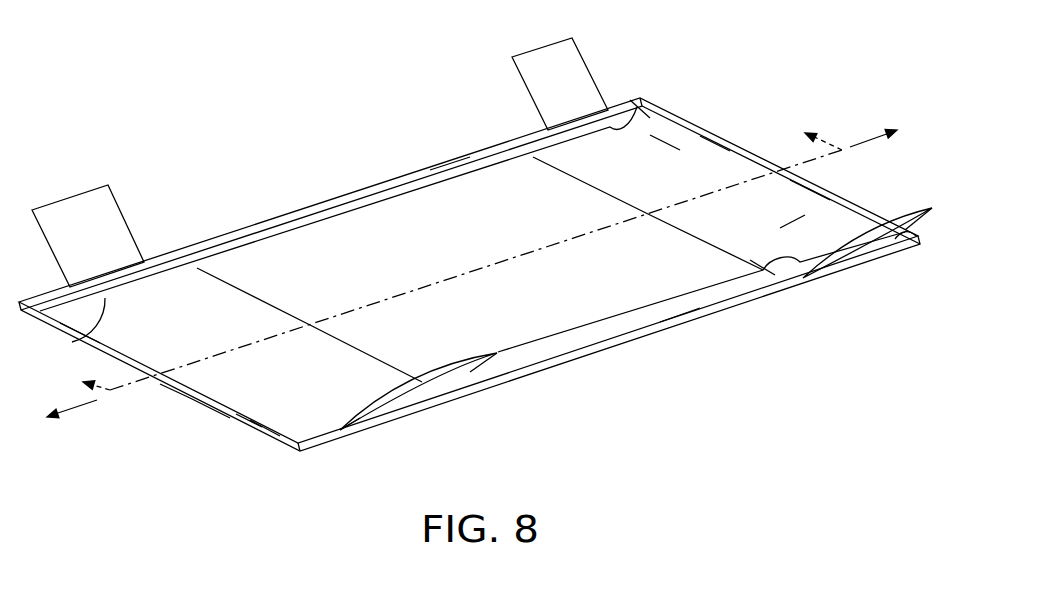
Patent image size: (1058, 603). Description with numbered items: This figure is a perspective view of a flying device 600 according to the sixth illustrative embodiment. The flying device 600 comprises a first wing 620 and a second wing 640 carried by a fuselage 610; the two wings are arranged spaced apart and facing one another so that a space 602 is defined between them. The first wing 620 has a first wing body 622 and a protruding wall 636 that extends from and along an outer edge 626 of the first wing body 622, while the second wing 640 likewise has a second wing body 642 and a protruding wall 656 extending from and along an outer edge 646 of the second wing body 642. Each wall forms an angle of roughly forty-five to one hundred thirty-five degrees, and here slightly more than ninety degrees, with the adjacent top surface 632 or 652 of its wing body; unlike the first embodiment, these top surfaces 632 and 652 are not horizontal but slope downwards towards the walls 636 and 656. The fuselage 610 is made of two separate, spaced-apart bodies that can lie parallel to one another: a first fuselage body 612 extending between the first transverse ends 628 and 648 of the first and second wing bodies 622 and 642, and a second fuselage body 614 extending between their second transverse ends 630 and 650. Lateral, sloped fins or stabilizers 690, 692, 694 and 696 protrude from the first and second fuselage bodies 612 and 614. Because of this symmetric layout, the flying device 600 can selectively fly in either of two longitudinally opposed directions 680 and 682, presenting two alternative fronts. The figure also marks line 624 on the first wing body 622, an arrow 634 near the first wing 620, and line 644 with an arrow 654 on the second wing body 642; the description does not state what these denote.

The flying device 600 is at (260, 76).
The space 602 is at (412, 222).
The fuselage 610 is at (598, 362).
The first fuselage body 612 is at (683, 322).
The second fuselage body 614 is at (453, 178).
The first wing 620 is at (200, 416).
The first wing body 622 is at (248, 404).
The first fold line 624 is at (344, 357).
The outer edge 626 is at (264, 416).
The first transverse end 628 is at (78, 330).
The second transverse end 630 is at (356, 420).
The top surface 632 is at (232, 302).
The first flap fold direction 634 is at (171, 395).
The protruding wall 636 is at (90, 343).
The second wing 640 is at (825, 168).
The second wing body 642 is at (795, 222).
The second fold line 644 is at (707, 245).
The outer edge 646 is at (838, 216).
The first transverse end 648 is at (648, 108).
The second transverse end 650 is at (760, 270).
The top surface 652 is at (657, 155).
The second flap fold direction 654 is at (668, 232).
The protruding wall 656 is at (715, 140).
The direction 680 is at (79, 416).
The direction 682 is at (868, 138).
The fin or stabilizer 690 is at (110, 188).
The fin or stabilizer 692 is at (573, 62).
The fin or stabilizer 694 is at (415, 398).
The fin or stabilizer 696 is at (842, 260).